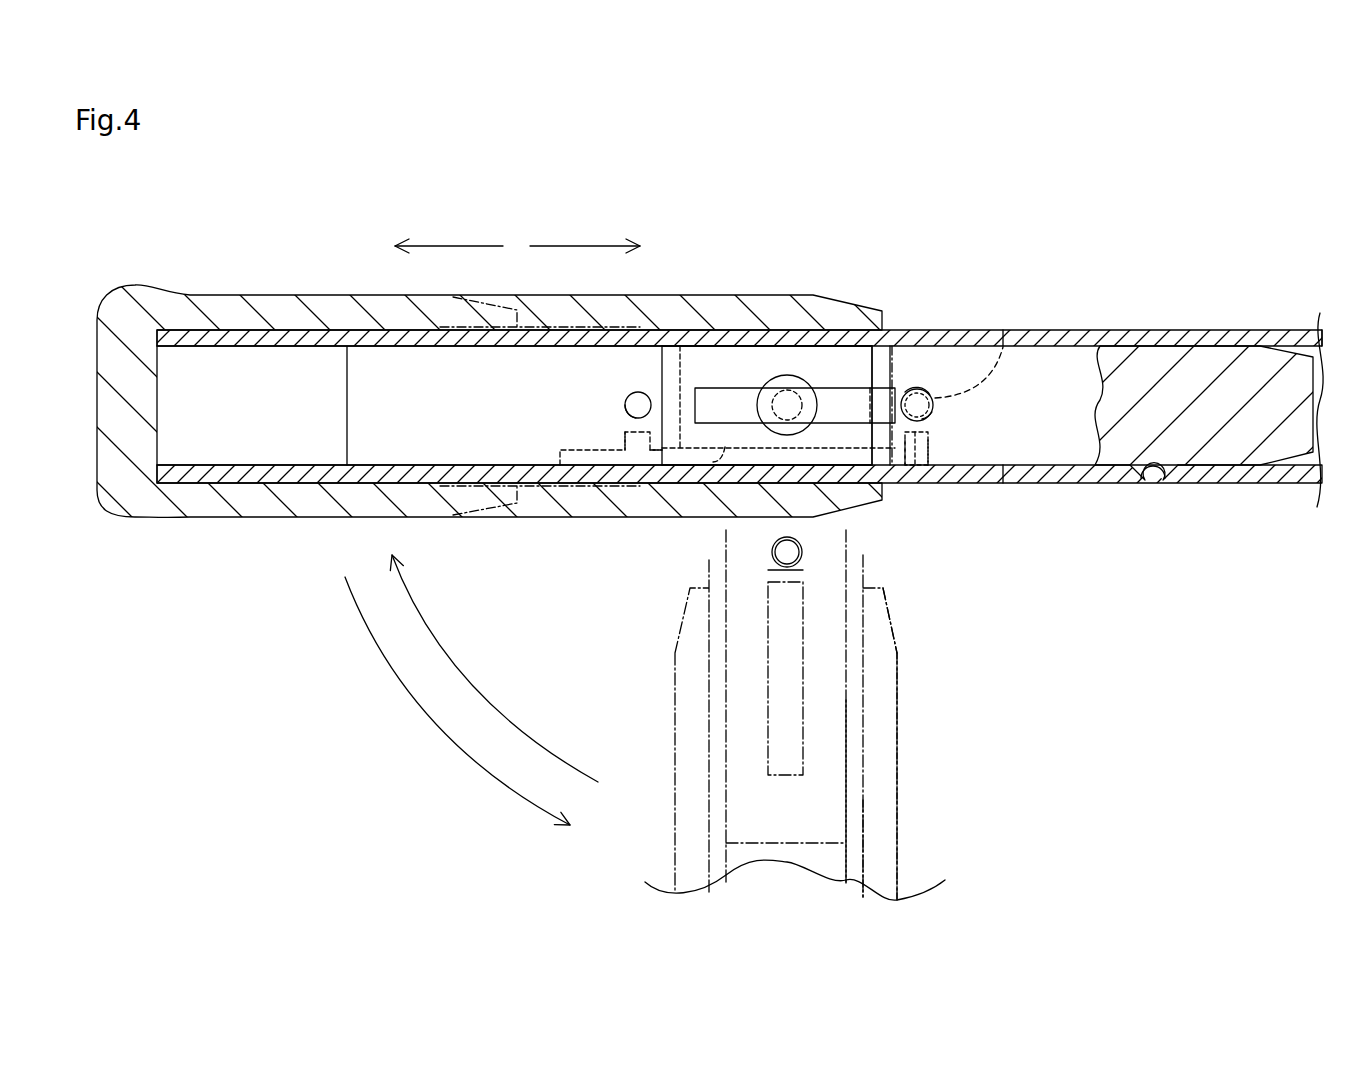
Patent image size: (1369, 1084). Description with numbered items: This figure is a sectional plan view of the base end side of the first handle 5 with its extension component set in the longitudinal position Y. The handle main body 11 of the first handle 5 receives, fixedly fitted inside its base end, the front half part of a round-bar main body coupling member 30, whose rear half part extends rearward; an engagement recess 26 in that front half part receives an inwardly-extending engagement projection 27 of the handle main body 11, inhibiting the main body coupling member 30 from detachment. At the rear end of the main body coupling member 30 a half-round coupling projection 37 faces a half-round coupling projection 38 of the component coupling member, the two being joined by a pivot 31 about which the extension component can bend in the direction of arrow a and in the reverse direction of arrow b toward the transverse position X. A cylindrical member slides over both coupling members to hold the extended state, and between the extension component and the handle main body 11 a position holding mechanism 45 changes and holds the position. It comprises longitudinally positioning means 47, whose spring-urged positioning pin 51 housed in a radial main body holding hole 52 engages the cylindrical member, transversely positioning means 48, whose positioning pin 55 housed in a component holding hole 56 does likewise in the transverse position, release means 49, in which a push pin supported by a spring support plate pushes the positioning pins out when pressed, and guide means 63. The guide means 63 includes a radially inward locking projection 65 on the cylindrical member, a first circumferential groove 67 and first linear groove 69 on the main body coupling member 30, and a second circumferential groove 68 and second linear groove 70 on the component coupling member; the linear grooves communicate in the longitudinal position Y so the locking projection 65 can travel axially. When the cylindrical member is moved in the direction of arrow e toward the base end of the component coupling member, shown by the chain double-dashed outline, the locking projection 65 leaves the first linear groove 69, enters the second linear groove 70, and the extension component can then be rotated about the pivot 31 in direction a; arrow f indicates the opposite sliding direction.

The first handle 5 is at (1132, 248).
The handle main body 11 is at (1283, 330).
The engagement recess 26 is at (1168, 462).
The engagement projection 27 is at (1153, 481).
The main body coupling member 30 is at (1070, 345).
The pivot 31 is at (787, 375).
The coupling projection 37 is at (893, 365).
The coupling projection 38 is at (815, 355).
The position holding mechanism 45 is at (930, 385).
The longitudinally positioning means 47 is at (1005, 345).
The transversely positioning means 48 is at (643, 389).
The release means 49 is at (932, 415).
The positioning pin 51 is at (930, 430).
The main body holding hole 52 is at (917, 435).
The positioning pin 55 is at (648, 418).
The component holding hole 56 is at (634, 418).
The guide means 63 is at (712, 467).
The locking projection 65 is at (903, 470).
The first circumferential groove 67 is at (925, 440).
The second circumferential groove 68 is at (627, 437).
The first linear groove 69 is at (725, 447).
The second linear groove 70 is at (587, 447).
The transverse position X is at (905, 767).
The longitudinal position Y is at (360, 283).
The arrow a direction a is at (432, 722).
The arrow b direction b is at (476, 686).
The arrow e direction e is at (470, 246).
The sliding direction f is at (573, 246).